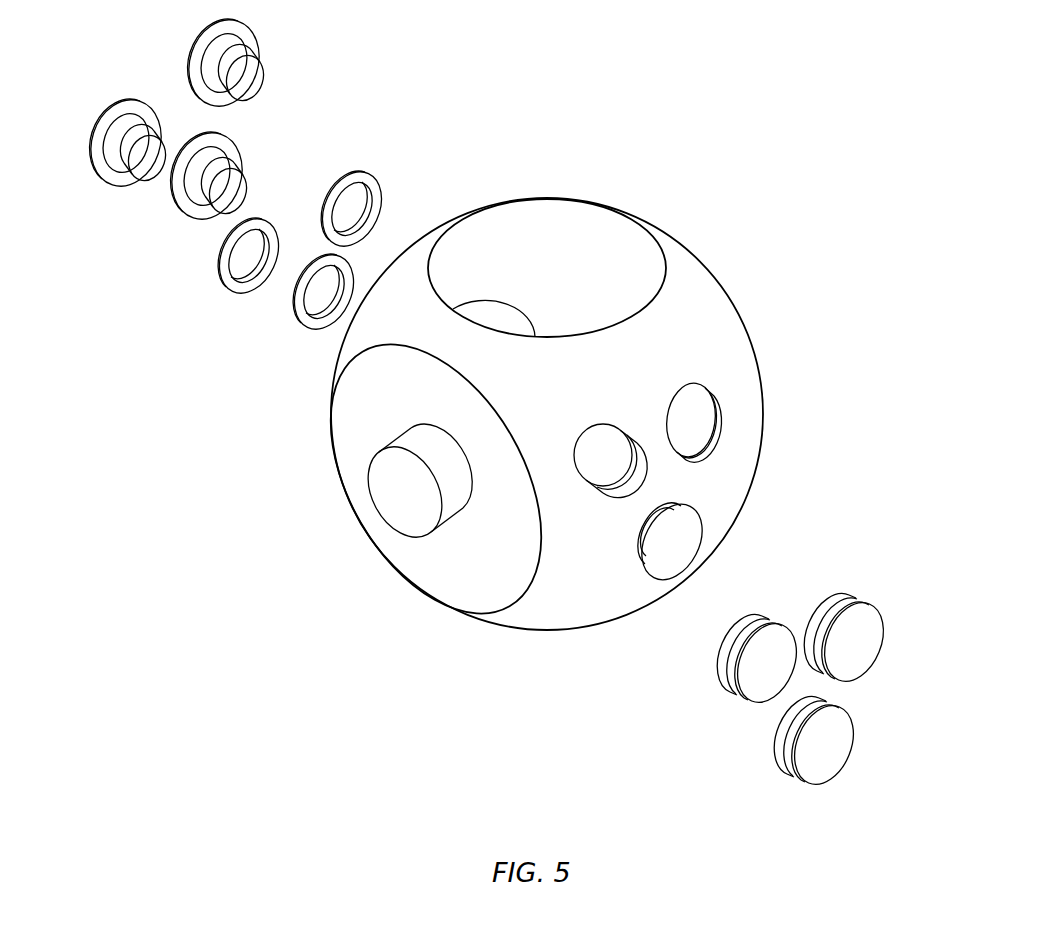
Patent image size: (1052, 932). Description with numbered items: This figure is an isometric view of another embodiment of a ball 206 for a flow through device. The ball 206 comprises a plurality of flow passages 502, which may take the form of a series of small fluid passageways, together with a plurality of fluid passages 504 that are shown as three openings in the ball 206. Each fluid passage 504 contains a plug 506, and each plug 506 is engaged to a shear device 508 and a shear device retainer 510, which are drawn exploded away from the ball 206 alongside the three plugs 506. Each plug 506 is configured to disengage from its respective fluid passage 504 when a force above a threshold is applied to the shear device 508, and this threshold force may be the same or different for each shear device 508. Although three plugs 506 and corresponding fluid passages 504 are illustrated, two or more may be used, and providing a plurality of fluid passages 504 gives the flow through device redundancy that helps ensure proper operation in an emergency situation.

The ball 206 is at (525, 467).
The flow passage 502 is at (576, 235).
The fluid passage 504 is at (726, 485).
The plug 506 is at (840, 658).
The shear device 508 is at (253, 269).
The shear device retainer 510 is at (237, 120).